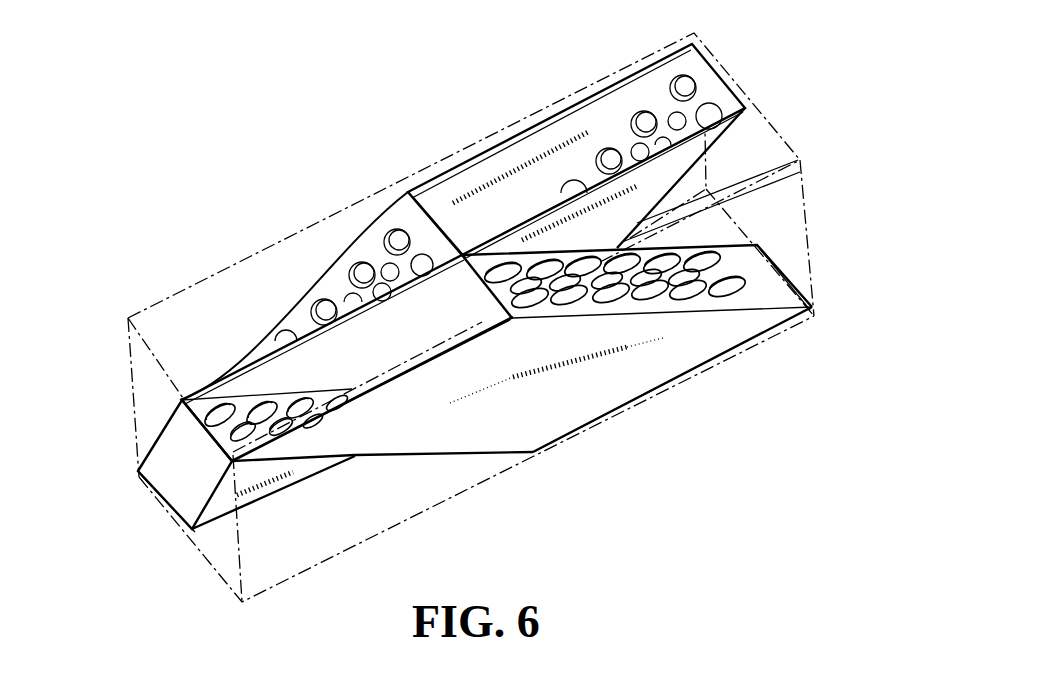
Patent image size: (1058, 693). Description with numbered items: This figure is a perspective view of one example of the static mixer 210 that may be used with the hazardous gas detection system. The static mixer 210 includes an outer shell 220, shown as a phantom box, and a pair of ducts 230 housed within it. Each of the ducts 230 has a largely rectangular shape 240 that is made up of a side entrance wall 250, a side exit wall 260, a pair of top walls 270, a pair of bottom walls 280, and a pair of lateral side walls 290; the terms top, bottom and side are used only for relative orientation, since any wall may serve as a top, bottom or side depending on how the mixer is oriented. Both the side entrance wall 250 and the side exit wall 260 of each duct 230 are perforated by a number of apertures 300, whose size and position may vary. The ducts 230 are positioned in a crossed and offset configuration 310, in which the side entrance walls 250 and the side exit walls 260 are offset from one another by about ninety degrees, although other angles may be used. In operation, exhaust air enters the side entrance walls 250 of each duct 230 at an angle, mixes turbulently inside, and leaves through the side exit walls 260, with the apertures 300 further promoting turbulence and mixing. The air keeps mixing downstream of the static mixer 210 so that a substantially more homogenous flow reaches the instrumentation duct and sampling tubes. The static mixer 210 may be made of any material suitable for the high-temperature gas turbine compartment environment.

The static mixer 210 is at (289, 170).
The outer shell 220 is at (330, 563).
The ducts 230 is at (637, 68).
The largely rectangular shape 240 is at (583, 428).
The side entrance wall 250 is at (690, 204).
The side exit wall 260 is at (213, 430).
The top walls 270 is at (383, 362).
The bottom walls 280 is at (700, 366).
The lateral side walls 290 is at (502, 428).
The apertures 300 is at (731, 285).
The crossed and offset configuration 310 is at (560, 443).